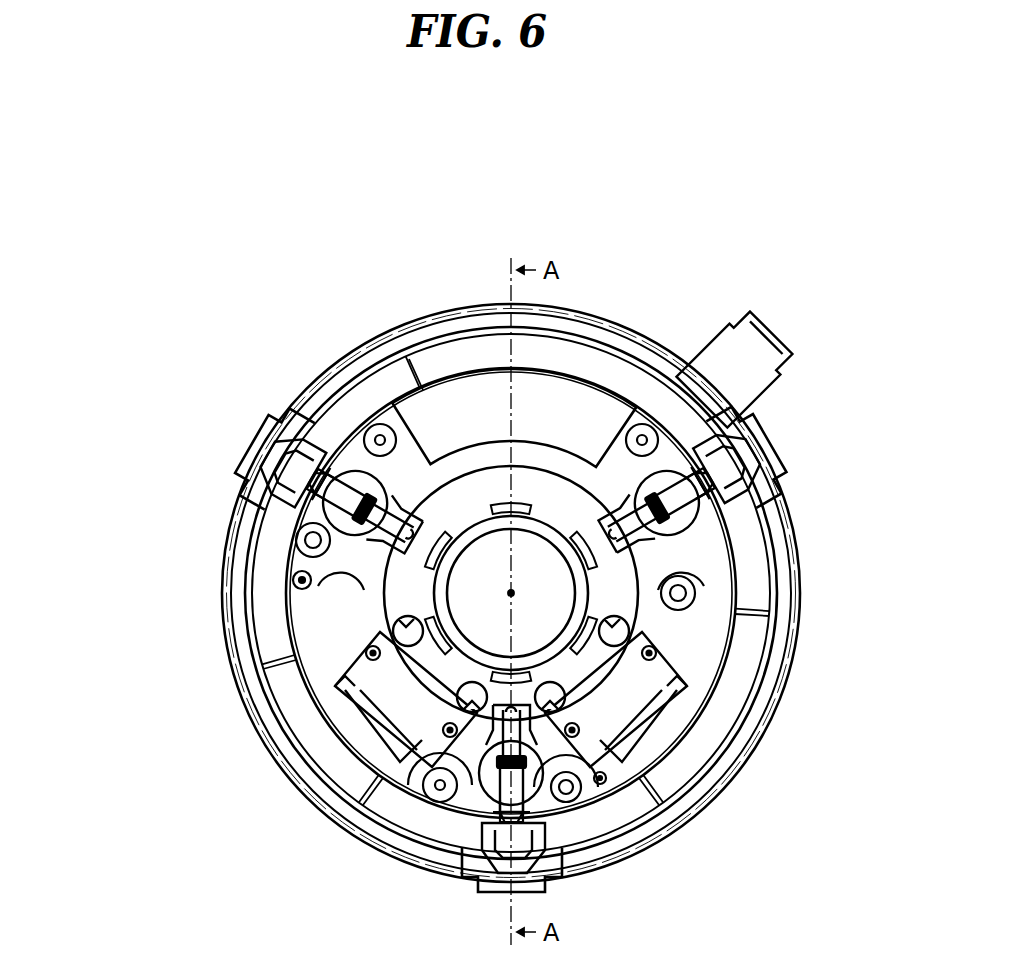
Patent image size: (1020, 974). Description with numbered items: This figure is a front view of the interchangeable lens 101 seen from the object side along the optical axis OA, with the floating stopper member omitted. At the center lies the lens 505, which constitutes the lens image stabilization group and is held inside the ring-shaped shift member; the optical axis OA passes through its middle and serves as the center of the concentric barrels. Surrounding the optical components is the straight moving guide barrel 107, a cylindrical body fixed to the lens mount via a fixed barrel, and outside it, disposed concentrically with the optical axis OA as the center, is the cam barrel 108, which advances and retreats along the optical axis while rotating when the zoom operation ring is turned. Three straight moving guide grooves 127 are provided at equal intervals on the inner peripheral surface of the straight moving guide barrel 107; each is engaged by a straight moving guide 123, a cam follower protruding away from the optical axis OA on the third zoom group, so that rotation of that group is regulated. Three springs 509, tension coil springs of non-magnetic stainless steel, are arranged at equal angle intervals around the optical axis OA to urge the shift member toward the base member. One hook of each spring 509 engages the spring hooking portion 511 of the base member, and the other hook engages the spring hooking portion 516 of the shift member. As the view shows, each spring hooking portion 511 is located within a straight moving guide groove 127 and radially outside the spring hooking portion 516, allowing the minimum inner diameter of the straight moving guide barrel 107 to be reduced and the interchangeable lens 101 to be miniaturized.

The interchangeable lens 101 is at (735, 238).
The straight moving guide barrel 107 is at (763, 598).
The cam barrel 108 is at (786, 546).
The straight moving guide 123 is at (326, 460).
The straight moving guide groove 127 is at (265, 462).
The lens 505 is at (458, 586).
The spring 509 is at (348, 500).
The spring hooking portion 511 is at (317, 478).
The spring hooking portion 516 is at (372, 527).
The optical axis OA is at (511, 593).